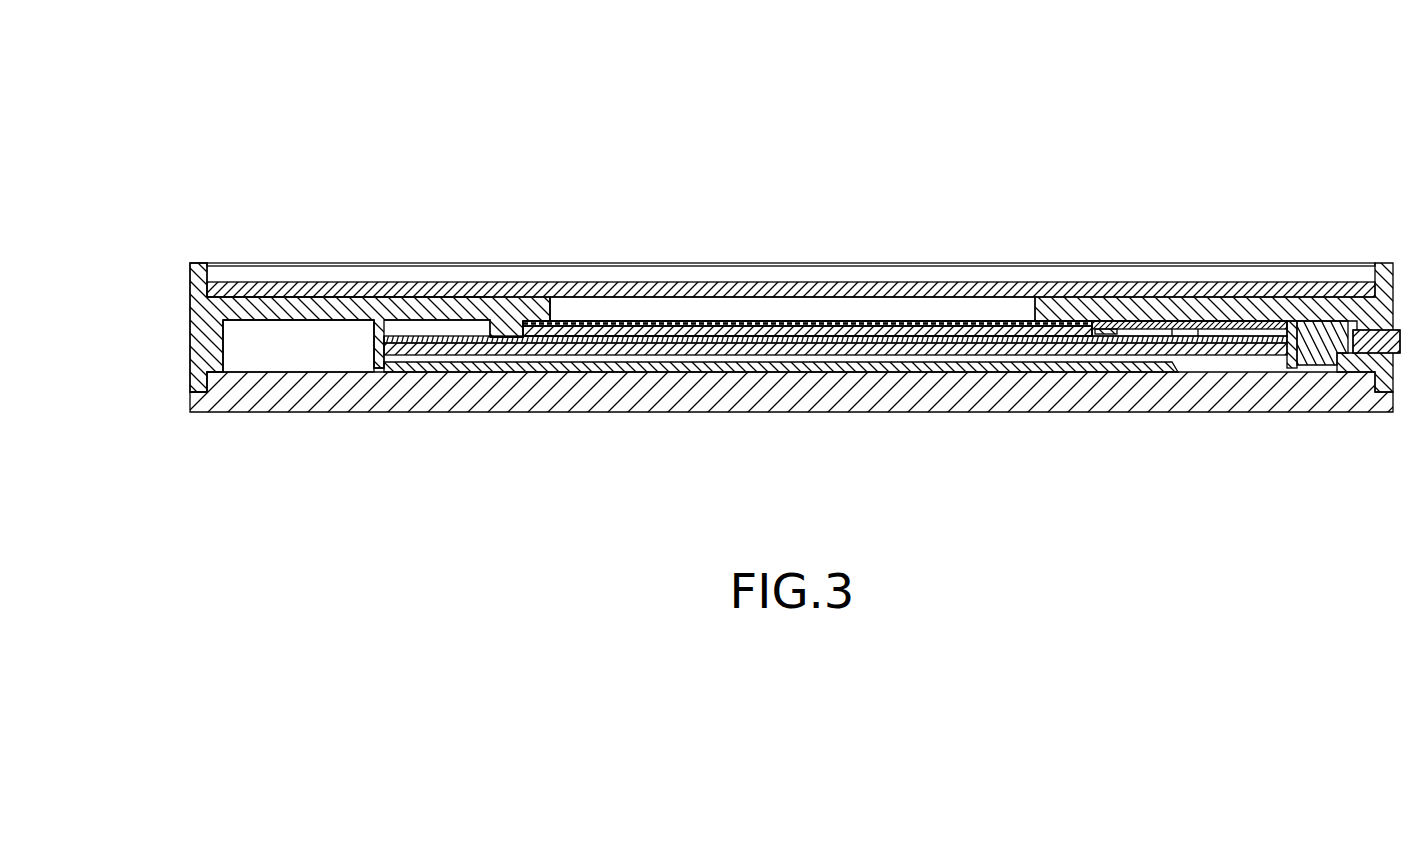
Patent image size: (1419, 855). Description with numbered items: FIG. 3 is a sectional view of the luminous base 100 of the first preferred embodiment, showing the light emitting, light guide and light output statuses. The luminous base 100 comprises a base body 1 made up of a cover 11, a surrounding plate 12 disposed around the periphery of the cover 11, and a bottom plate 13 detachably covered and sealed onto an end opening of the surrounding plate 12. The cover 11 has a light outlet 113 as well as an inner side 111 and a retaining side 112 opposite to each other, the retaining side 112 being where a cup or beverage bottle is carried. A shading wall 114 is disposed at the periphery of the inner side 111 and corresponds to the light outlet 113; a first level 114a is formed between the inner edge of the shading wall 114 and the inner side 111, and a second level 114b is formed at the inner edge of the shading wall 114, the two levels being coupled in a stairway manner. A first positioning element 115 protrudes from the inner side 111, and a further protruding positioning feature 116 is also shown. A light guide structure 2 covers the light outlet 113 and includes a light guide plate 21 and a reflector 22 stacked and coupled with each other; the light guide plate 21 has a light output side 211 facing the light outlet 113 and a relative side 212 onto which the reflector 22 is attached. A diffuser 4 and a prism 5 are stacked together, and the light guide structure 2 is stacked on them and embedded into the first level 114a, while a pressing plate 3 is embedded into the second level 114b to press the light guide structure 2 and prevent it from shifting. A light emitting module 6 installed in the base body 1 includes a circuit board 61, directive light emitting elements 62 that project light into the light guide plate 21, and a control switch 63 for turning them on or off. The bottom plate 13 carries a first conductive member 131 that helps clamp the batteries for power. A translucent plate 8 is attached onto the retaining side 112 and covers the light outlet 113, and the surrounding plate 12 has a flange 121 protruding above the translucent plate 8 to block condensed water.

The luminous base 100 is at (268, 66).
The base body 1 is at (183, 305).
The cover 11 is at (302, 305).
The inner side 111 is at (250, 320).
The retaining side 112 is at (250, 320).
The light outlet 113 is at (606, 310).
The shading wall 114 is at (490, 328).
The first level 114a is at (552, 320).
The second level 114b is at (515, 337).
The first positioning element 115 is at (1293, 367).
The supporting post 116 is at (378, 365).
The surrounding plate 12 is at (205, 347).
The flange 121 is at (1387, 272).
The bottom plate 13 is at (345, 412).
The first conductive member 131 is at (560, 368).
The light guide structure 2 is at (835, 153).
The light guide plate 21 is at (837, 323).
The reflector 22 is at (893, 337).
The light output side 211 is at (958, 328).
The relative side 212 is at (935, 330).
The pressing plate 3 is at (790, 357).
The diffuser 4 is at (749, 323).
The prism 5 is at (768, 323).
The light emitting module 6 is at (1107, 174).
The circuit board 61 is at (1152, 325).
The directive light emitting element 62 is at (1103, 330).
The control switch 63 is at (1323, 360).
The translucent plate 8 is at (687, 290).